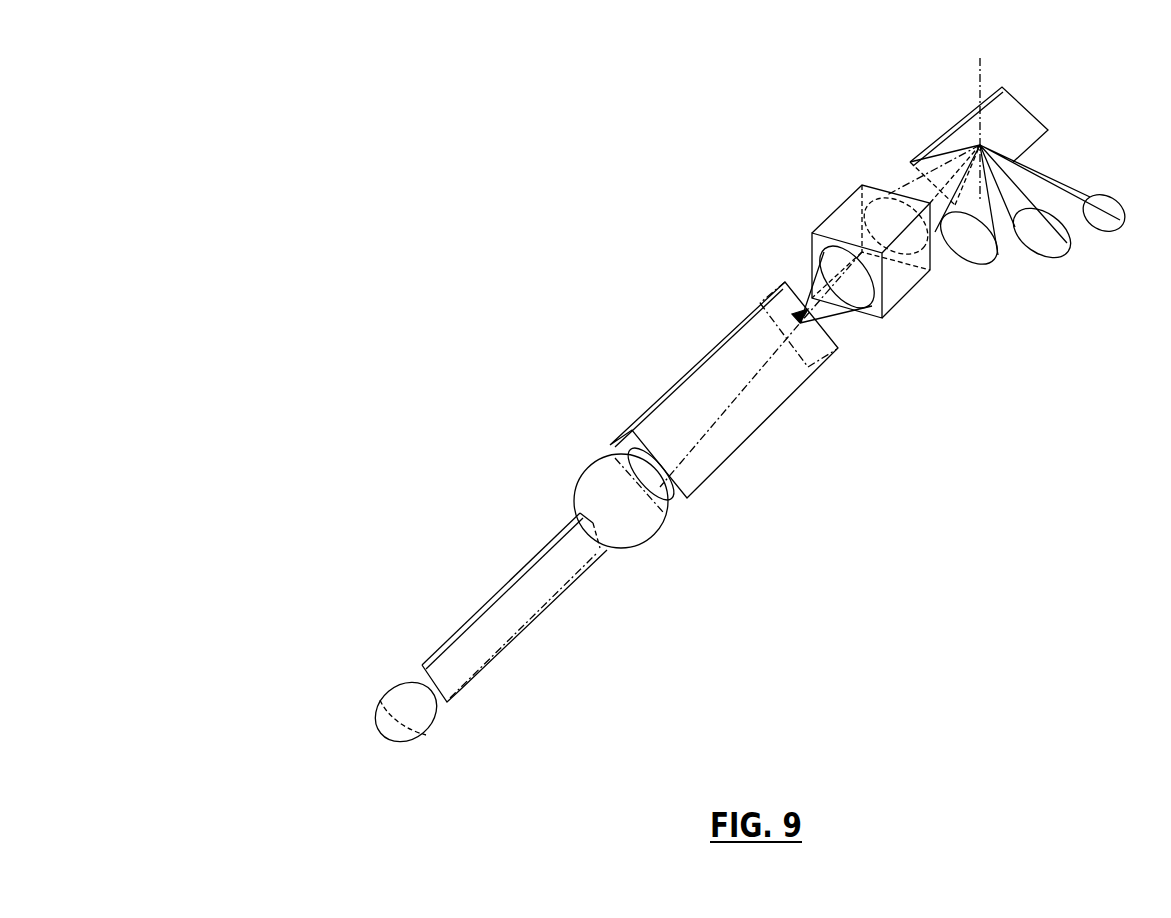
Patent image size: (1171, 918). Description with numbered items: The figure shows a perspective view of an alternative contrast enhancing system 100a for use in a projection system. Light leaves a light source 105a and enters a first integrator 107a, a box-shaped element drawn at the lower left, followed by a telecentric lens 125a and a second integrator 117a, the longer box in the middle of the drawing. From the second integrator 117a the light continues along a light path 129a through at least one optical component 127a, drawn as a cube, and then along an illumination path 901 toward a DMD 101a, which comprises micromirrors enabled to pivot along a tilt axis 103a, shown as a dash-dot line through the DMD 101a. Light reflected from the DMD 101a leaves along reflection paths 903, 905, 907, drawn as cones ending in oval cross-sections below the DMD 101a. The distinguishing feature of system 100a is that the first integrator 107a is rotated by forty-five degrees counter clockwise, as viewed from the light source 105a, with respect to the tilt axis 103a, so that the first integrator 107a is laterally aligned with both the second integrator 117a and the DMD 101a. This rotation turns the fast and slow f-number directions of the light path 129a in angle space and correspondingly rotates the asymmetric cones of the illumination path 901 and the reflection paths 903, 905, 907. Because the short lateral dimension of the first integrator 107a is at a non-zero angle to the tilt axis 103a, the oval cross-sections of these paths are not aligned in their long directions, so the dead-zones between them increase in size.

The contrast enhancing system 100a is at (318, 263).
The DMD 101a is at (1020, 137).
The tilt axis 103a is at (983, 73).
The light source 105a is at (377, 699).
The first integrator 107a is at (487, 607).
The second integrator 117a is at (678, 378).
The telecentric lens 125a is at (582, 465).
The optical component 127a is at (835, 212).
The light path 129a is at (812, 268).
The illumination path 901 is at (897, 187).
The reflection path 903 is at (982, 250).
The reflection path 905 is at (1108, 226).
The reflection path 907 is at (1063, 238).